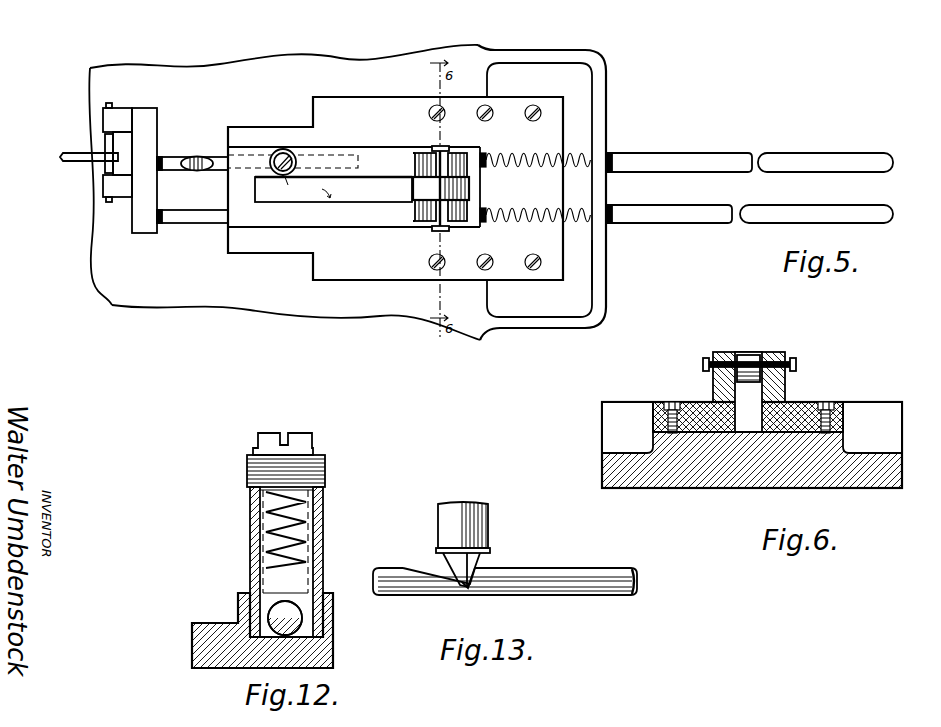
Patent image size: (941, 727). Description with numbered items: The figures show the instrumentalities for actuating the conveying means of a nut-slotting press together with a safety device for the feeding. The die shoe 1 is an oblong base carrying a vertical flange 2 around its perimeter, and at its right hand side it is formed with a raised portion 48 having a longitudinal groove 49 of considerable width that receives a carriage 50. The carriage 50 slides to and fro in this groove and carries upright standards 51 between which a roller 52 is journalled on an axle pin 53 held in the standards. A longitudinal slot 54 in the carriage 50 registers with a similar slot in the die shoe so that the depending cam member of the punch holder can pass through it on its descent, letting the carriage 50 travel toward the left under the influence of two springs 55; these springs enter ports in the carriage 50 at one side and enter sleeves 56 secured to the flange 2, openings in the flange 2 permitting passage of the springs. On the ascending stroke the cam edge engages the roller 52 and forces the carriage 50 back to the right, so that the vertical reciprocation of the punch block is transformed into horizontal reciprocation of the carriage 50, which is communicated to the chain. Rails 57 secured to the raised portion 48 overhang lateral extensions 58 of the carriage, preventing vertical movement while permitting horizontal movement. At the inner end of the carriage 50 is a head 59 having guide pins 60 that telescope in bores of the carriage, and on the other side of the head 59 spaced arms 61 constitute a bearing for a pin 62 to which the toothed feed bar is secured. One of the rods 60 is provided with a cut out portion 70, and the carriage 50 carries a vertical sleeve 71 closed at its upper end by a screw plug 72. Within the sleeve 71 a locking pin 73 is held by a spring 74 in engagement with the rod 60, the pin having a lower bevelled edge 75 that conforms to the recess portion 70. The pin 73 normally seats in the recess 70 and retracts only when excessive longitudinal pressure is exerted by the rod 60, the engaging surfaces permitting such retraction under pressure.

In FIG. 5, the die shoe 1 is at (560, 65).
In FIG. 5, the vertical flange 2 is at (601, 258).
In FIG. 5, the raised portion 48 is at (471, 157).
In FIG. 6, the raised portion 48 is at (835, 424).
In FIG. 5, the longitudinal groove 49 is at (364, 227).
In FIG. 6, the longitudinal groove 49 is at (797, 432).
In FIG. 5, the carriage 50 is at (428, 152).
In FIG. 6, the carriage 50 is at (786, 400).
In FIG. 5, the upright standards 51 is at (434, 212).
In FIG. 6, the upright standards 51 is at (726, 352).
In FIG. 5, the roller 52 is at (423, 188).
In FIG. 6, the roller 52 is at (752, 354).
In FIG. 5, the axle pin 53 is at (443, 231).
In FIG. 6, the axle pin 53 is at (704, 365).
In FIG. 5, the longitudinal slot 54 is at (318, 190).
In FIG. 5, the springs 55 is at (577, 155).
In FIG. 5, the sleeves 56 is at (716, 157).
In FIG. 6, the rails 57 is at (671, 402).
In FIG. 6, the lateral extensions 58 is at (690, 432).
In FIG. 5, the head 59 is at (147, 122).
In FIG. 5, the guide pins 60 is at (164, 157).
In FIG. 13, the guide pins 60 is at (568, 583).
In FIG. 5, the spaced arms 61 is at (113, 117).
In FIG. 5, the pin 62 is at (109, 139).
In FIG. 5, the cut out portion 70 is at (197, 157).
In FIG. 13, the cut out portion 70 is at (441, 572).
In FIG. 5, the sleeve 71 is at (282, 149).
In FIG. 12, the sleeve 71 is at (323, 511).
In FIG. 5, the screw plug 72 is at (296, 187).
In FIG. 12, the screw plug 72 is at (298, 453).
In FIG. 12, the pin 73 is at (268, 607).
In FIG. 13, the pin 73 is at (462, 570).
In FIG. 12, the spring 74 is at (293, 507).
In FIG. 12, the lower bevelled edge 75 is at (292, 618).
In FIG. 13, the lower bevelled edge 75 is at (470, 588).